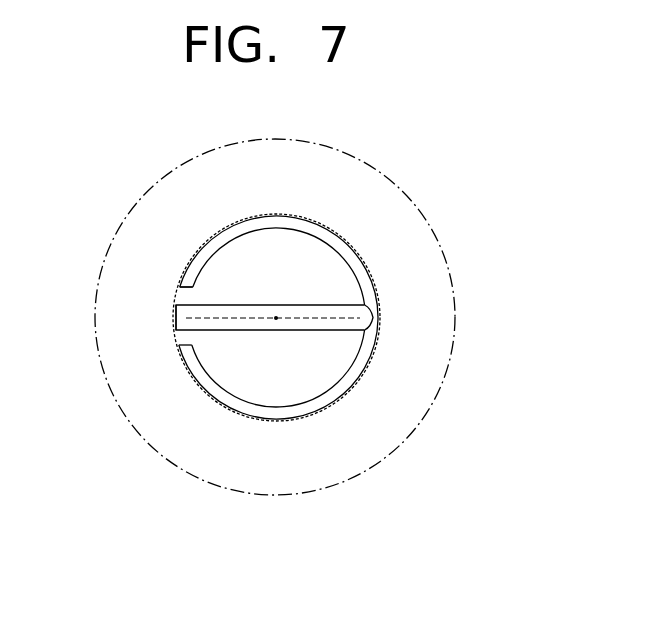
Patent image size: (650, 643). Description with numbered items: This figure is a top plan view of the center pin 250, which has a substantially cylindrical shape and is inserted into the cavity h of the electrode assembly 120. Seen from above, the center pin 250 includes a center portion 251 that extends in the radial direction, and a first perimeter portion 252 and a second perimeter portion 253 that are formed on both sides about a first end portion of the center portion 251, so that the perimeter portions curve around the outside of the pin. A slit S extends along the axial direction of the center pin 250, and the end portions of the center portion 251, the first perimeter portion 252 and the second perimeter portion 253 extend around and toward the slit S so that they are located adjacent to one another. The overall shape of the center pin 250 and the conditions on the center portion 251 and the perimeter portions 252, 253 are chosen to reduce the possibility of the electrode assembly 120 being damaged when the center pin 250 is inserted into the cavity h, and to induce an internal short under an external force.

The electrode assembly 120 is at (391, 227).
The center pin 250 is at (373, 277).
The center portion 251 is at (309, 311).
The first perimeter portion 252 is at (273, 222).
The second perimeter portion 253 is at (272, 413).
The cavity h is at (198, 254).
The slit S is at (173, 319).